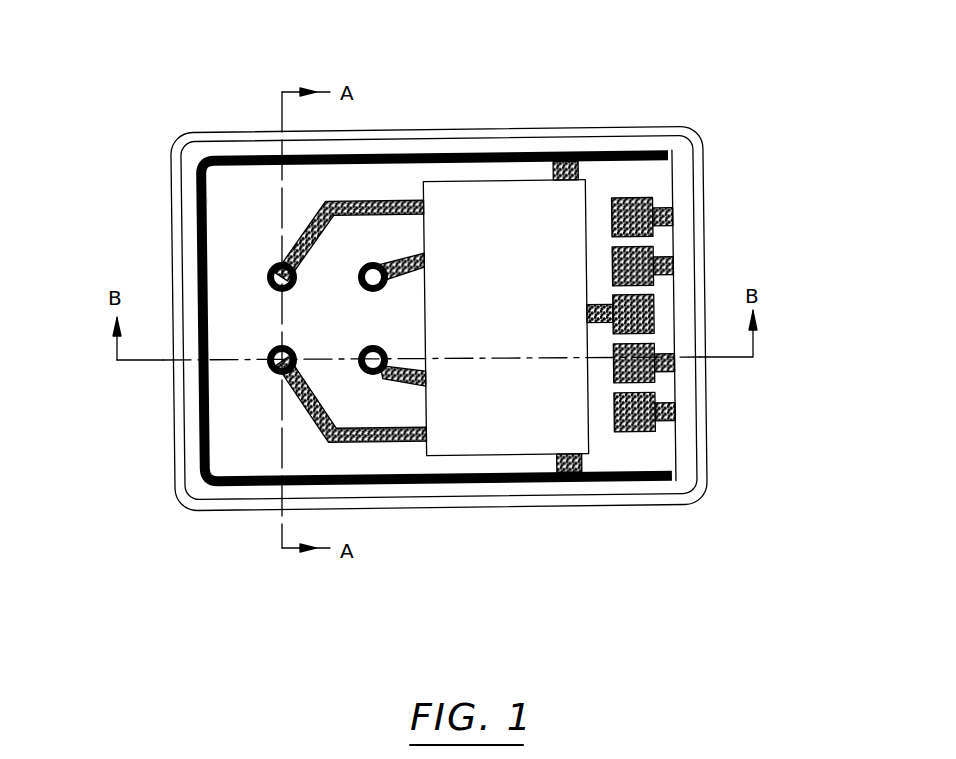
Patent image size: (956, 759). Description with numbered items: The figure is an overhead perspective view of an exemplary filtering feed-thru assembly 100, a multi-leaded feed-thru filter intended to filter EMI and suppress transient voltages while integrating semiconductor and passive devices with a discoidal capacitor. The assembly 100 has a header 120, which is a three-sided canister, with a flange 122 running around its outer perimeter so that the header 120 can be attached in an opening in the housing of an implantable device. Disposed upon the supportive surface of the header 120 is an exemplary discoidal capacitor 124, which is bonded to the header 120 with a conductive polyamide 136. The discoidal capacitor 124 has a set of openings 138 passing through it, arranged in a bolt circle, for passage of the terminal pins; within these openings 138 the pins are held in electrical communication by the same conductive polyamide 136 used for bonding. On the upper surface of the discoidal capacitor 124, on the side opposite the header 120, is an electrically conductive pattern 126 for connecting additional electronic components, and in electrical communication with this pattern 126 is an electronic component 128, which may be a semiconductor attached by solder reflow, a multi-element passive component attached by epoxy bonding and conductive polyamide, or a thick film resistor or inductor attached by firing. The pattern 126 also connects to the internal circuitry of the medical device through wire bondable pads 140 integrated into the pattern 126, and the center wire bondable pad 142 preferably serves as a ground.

The filtering feed-thru assembly 100 is at (266, 527).
The header 120 is at (405, 150).
The flange 122 is at (540, 137).
The discoidal capacitor 124 is at (260, 226).
The electrically conductive pattern 126 is at (362, 199).
The electronic component 128 is at (527, 312).
The conductive polyamide 136 is at (200, 268).
The set of openings 138 is at (360, 348).
The wire bondable pads 140 is at (675, 217).
The center wire bondable pad 142 is at (655, 310).